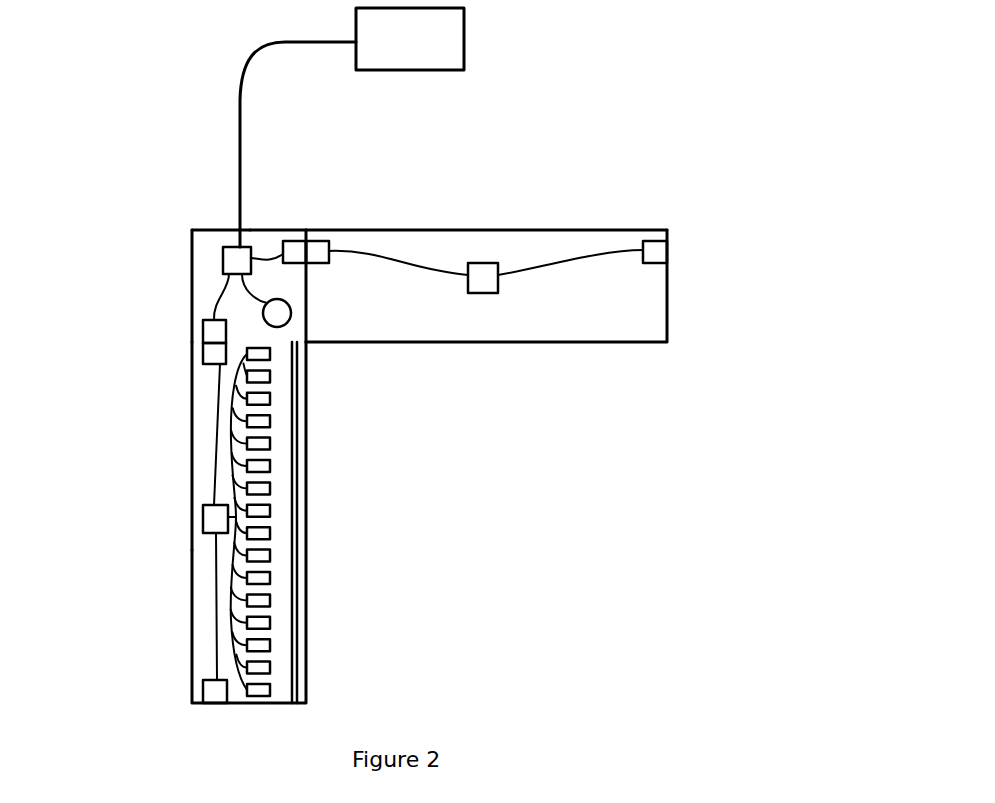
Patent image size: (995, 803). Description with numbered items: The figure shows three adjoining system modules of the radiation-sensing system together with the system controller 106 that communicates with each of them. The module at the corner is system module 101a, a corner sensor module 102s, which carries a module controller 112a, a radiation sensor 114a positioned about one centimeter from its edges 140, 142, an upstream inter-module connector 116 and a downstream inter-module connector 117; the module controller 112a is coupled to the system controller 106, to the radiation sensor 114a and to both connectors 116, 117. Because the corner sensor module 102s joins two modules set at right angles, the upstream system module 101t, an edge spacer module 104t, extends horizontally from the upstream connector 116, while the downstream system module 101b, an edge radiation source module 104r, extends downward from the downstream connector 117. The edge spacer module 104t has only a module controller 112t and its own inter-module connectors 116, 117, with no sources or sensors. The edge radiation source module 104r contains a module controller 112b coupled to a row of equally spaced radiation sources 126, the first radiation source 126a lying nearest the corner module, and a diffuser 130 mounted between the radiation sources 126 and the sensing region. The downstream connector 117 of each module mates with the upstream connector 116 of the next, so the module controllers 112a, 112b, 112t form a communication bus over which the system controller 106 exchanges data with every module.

The system controller 106 is at (431, 52).
The corner sensor module 102s is at (218, 237).
The system module 101a is at (203, 248).
The upstream system module 101t is at (373, 237).
The edge spacer module 104t is at (622, 242).
The edge 140 is at (307, 280).
The downstream system module 101b is at (198, 483).
The edge radiation source module 104r is at (202, 612).
The diffuser 130 is at (295, 463).
The module controller 112a is at (230, 260).
The upstream inter-module connector 116 is at (292, 240).
The downstream inter-module connector 117 is at (318, 240).
The edge 142 is at (210, 350).
The module controller 112t is at (480, 275).
The radiation sensor 114a is at (277, 313).
The module controller 112b is at (213, 520).
The first radiation source 126a is at (270, 352).
The radiation sources 126 is at (270, 488).